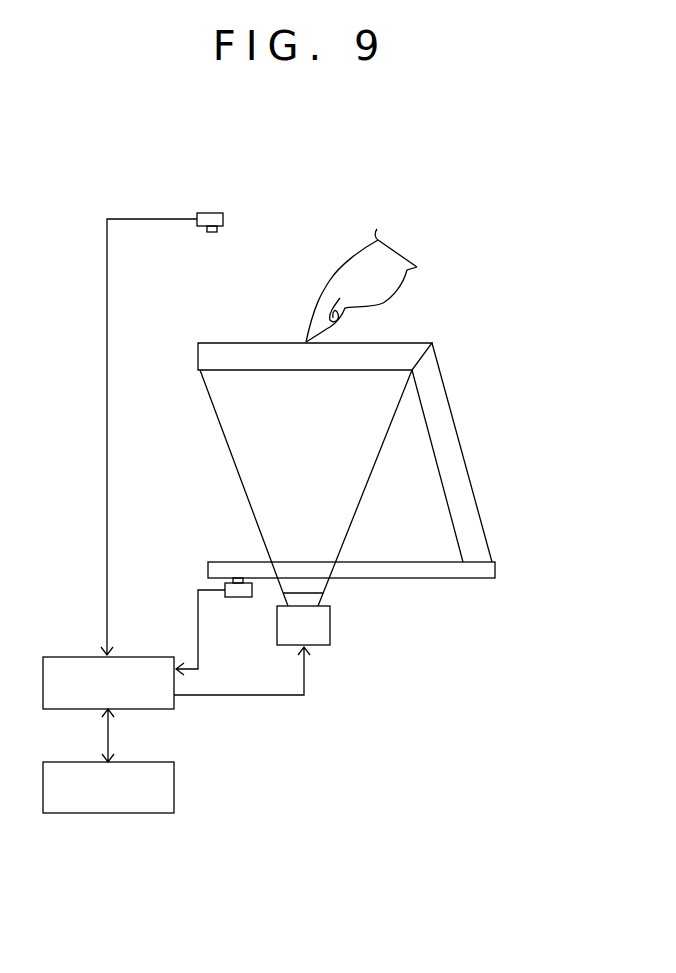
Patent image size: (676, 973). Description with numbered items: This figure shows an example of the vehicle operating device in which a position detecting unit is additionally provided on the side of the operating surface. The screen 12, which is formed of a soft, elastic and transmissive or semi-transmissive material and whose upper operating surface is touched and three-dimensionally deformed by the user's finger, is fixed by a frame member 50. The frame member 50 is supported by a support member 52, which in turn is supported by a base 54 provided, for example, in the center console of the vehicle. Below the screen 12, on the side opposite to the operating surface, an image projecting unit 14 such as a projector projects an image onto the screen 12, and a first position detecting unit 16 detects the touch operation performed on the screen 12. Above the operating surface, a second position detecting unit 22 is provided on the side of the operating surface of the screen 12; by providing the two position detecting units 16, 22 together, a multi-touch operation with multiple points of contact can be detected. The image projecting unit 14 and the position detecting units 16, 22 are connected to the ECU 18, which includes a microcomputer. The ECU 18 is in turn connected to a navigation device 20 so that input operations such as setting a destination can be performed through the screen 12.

The screen 12 is at (256, 334).
The image projecting unit 14 is at (330, 632).
The position detecting unit 16 is at (237, 600).
The ECU 18 is at (72, 657).
The navigation device 20 is at (174, 790).
The position detecting unit 22 is at (223, 219).
The frame member 50 is at (198, 350).
The support member 52 is at (465, 460).
The base 54 is at (495, 567).